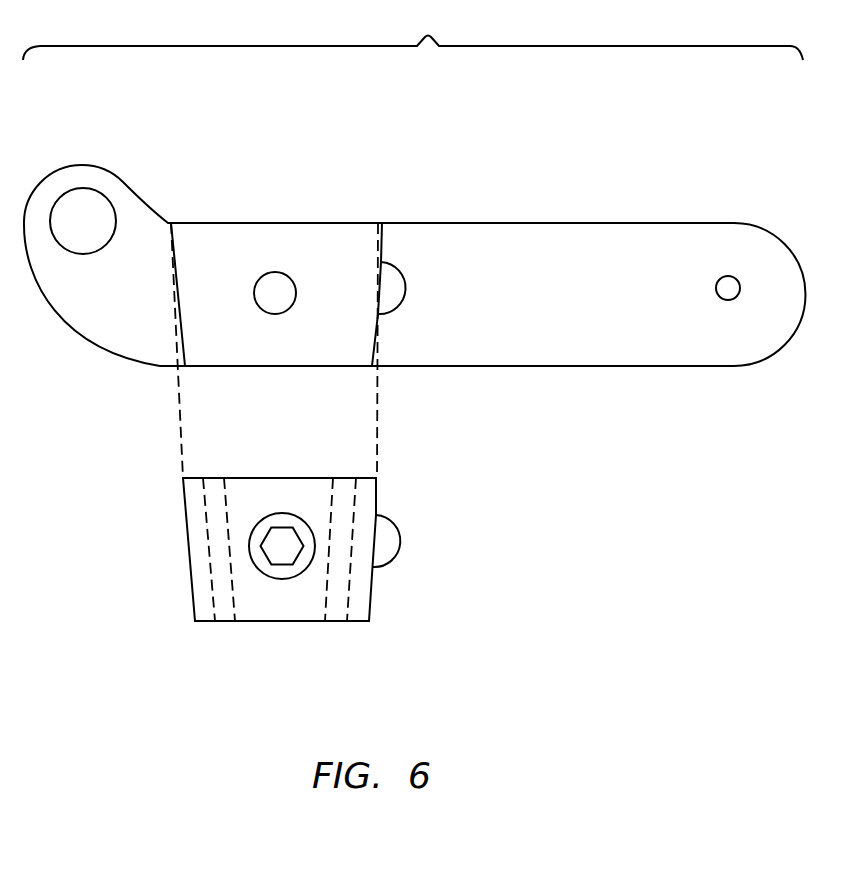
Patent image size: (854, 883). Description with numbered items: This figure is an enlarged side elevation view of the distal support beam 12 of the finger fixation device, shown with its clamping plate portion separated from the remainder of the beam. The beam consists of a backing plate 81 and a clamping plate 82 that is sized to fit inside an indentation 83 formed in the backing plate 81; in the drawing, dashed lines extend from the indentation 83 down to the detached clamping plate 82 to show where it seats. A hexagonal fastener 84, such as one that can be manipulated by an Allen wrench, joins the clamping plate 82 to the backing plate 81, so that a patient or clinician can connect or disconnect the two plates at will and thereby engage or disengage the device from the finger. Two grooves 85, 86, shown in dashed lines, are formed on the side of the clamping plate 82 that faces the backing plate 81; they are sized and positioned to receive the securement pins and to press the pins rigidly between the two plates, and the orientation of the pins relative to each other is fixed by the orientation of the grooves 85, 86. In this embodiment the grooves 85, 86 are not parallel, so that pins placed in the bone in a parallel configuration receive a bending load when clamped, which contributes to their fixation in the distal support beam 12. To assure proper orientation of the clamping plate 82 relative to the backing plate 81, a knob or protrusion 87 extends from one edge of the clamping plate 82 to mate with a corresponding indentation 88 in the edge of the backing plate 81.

The distal support beam 12 is at (428, 33).
The backing plate 81 is at (560, 222).
The clamping plate 82 is at (376, 505).
The indentation 83 is at (252, 240).
The hexagonal fastener 84 is at (273, 542).
The groove 85 is at (225, 575).
The groove 86 is at (343, 604).
The knob or protrusion 87 is at (397, 545).
The indentation 88 is at (402, 270).